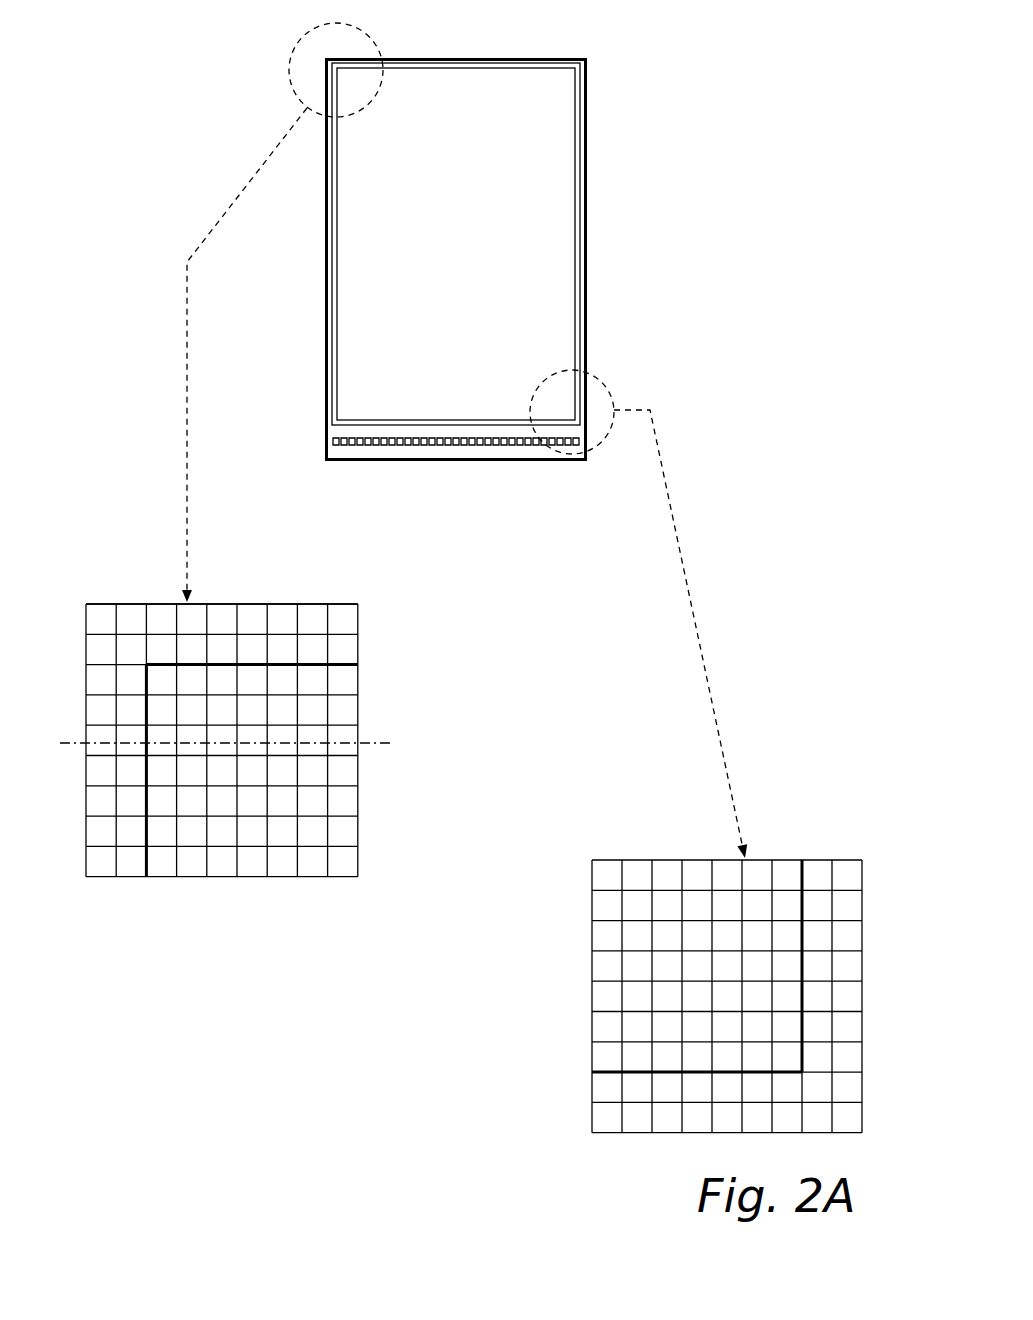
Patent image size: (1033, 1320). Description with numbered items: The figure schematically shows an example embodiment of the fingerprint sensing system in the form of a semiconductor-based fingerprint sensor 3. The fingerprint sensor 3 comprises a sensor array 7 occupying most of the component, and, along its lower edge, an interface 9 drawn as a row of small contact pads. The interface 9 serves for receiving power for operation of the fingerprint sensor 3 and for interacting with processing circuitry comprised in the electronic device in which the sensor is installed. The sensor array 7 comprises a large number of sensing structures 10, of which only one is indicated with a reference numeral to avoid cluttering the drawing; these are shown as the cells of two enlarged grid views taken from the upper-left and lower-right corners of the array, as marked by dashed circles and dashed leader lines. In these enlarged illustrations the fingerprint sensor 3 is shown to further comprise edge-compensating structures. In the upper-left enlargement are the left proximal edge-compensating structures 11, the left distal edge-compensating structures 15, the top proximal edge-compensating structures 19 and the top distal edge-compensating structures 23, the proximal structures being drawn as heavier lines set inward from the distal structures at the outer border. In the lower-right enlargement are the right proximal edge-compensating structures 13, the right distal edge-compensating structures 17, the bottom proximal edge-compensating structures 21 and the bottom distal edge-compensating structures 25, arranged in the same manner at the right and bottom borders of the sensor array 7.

The fingerprint sensor 3 is at (644, 60).
The sensor array 7 is at (462, 248).
The interface 9 is at (376, 461).
The sensing structure 10 is at (242, 756).
The left proximal edge-compensating structures 11 is at (142, 587).
The right proximal edge-compensating structures 13 is at (804, 844).
The left distal edge-compensating structures 15 is at (92, 587).
The right distal edge-compensating structures 17 is at (858, 844).
The top proximal edge-compensating structures 19 is at (380, 661).
The bottom proximal edge-compensating structures 21 is at (576, 1077).
The top distal edge-compensating structures 23 is at (382, 610).
The bottom distal edge-compensating structures 25 is at (576, 1121).